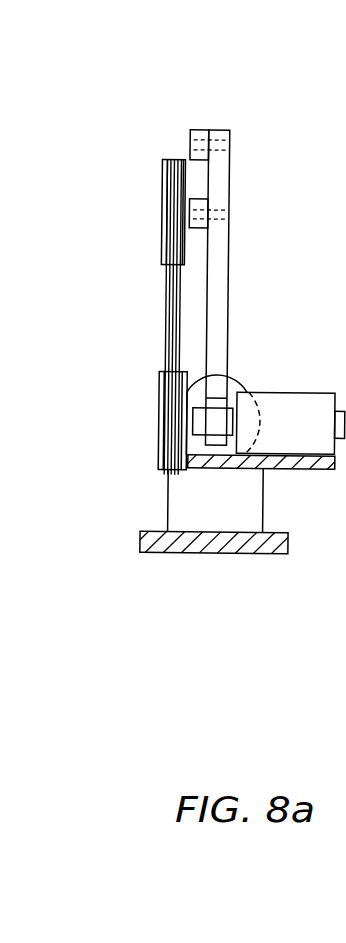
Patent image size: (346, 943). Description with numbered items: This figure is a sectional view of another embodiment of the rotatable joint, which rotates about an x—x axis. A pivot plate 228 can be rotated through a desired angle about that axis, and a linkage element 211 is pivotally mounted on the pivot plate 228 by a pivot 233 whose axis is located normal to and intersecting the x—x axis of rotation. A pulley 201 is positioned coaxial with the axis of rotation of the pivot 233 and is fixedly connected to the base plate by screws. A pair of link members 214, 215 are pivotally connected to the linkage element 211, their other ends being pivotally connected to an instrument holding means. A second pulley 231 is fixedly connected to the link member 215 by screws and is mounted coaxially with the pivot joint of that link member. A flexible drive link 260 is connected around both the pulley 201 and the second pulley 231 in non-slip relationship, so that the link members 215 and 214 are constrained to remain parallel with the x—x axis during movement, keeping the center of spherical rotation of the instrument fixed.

The pulley 201 is at (158, 405).
The linkage element 211 is at (228, 298).
The link member 214 is at (200, 130).
The link member 215 is at (200, 198).
The pivot plate 228 is at (218, 468).
The second pulley 231 is at (162, 183).
The pivot 233 is at (230, 407).
The flexible drive link 260 is at (165, 318).